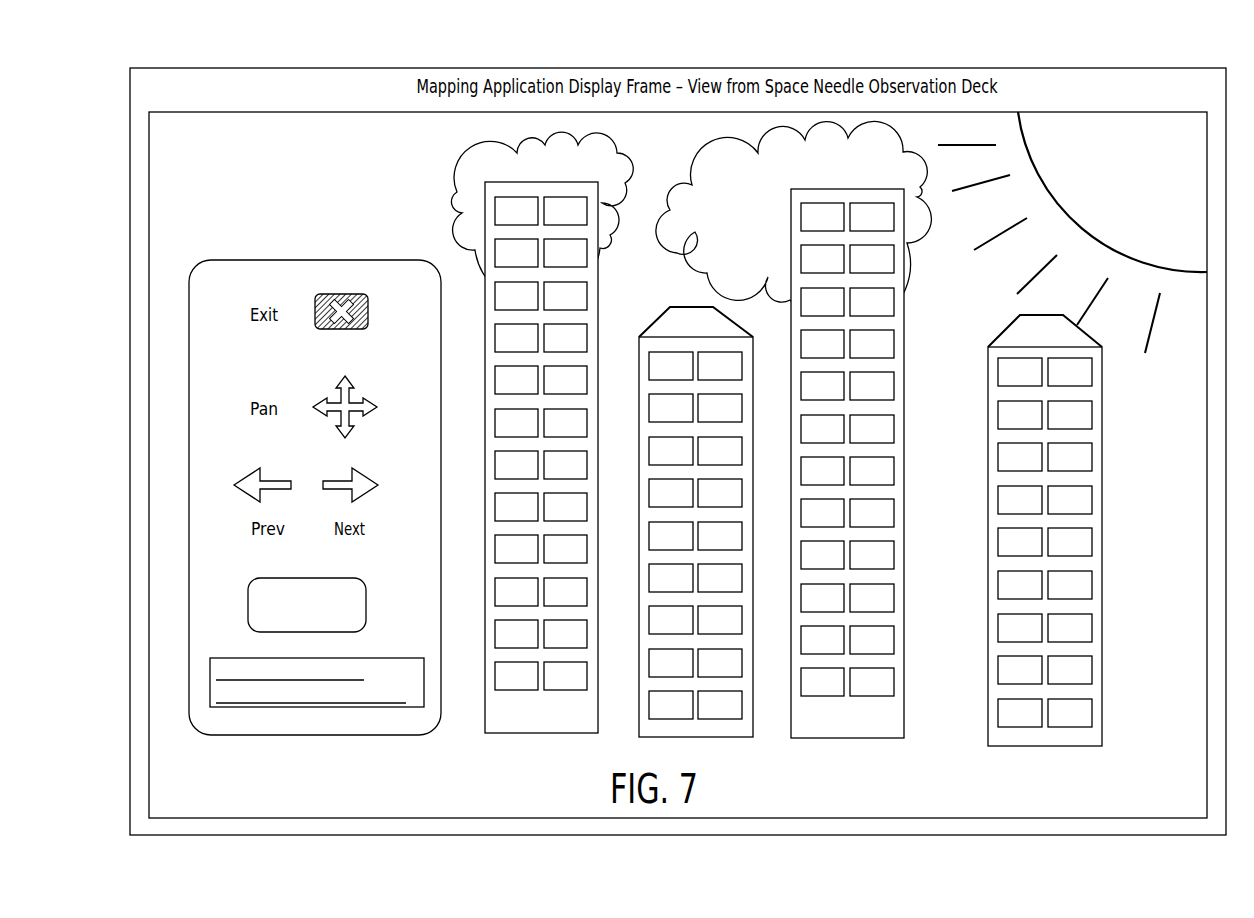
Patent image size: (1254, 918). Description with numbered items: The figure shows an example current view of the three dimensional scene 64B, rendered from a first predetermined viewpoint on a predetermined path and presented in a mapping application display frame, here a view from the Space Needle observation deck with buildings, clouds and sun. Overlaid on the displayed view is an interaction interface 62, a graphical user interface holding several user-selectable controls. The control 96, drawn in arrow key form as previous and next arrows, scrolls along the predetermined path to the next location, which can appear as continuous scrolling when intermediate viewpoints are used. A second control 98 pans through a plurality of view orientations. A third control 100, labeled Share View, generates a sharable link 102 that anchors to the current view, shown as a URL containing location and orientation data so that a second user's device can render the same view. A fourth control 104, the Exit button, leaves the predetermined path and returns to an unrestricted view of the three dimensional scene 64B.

The interaction interface 62 is at (344, 260).
The three dimensional scene 64B is at (424, 178).
The control 96 is at (367, 466).
The second control 98 is at (366, 390).
The third control 100 is at (367, 572).
The URL link 102 is at (382, 656).
The fourth control 104 is at (367, 292).